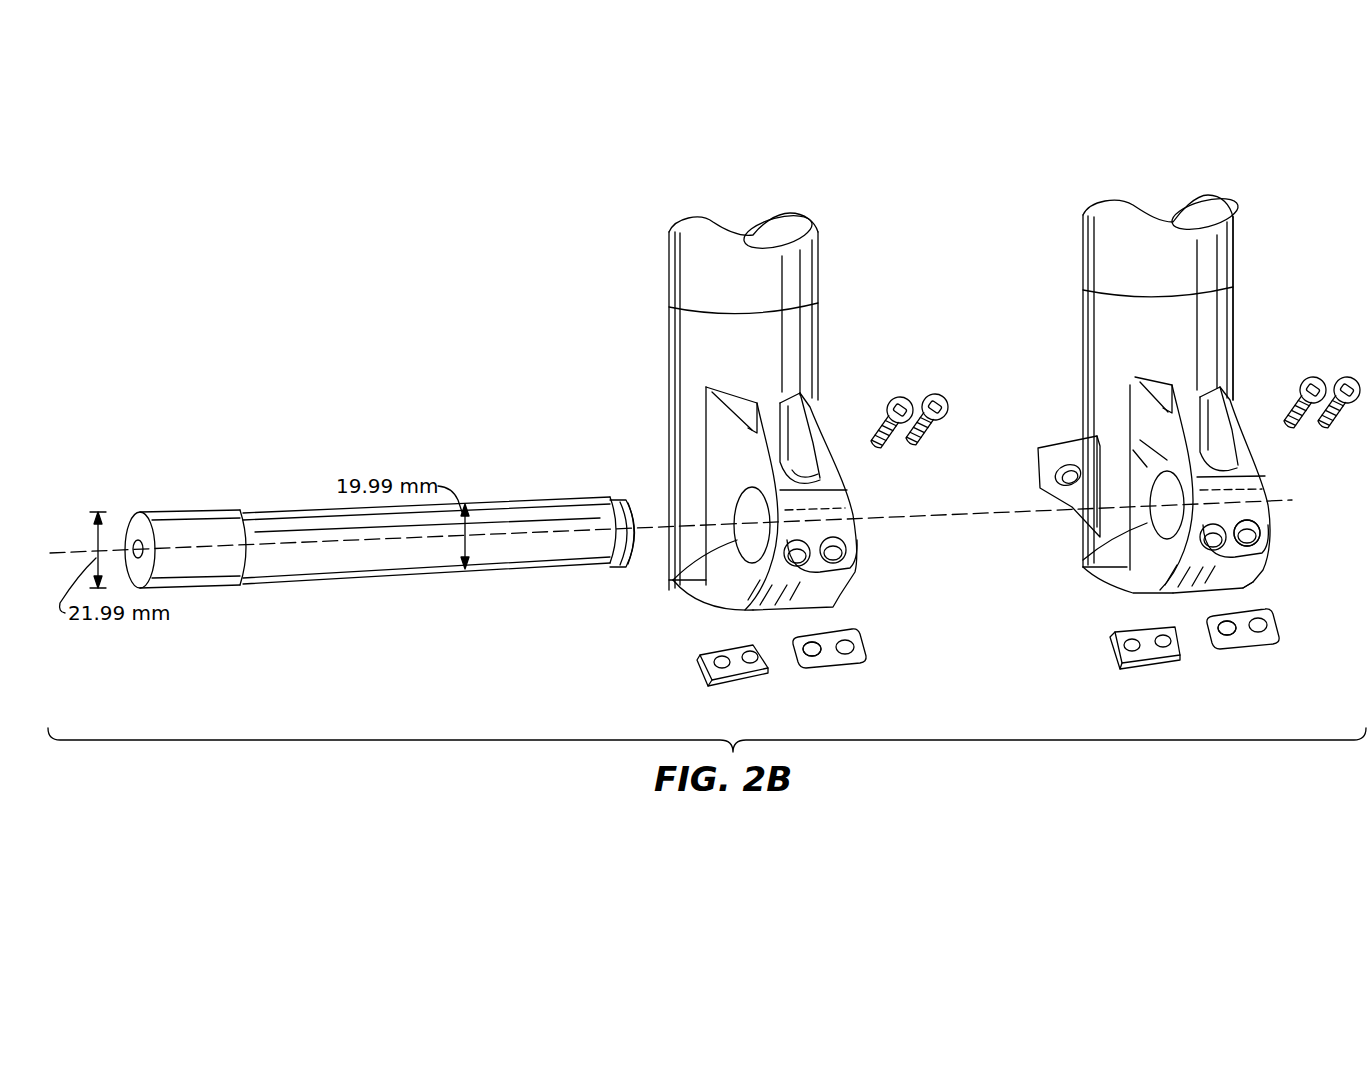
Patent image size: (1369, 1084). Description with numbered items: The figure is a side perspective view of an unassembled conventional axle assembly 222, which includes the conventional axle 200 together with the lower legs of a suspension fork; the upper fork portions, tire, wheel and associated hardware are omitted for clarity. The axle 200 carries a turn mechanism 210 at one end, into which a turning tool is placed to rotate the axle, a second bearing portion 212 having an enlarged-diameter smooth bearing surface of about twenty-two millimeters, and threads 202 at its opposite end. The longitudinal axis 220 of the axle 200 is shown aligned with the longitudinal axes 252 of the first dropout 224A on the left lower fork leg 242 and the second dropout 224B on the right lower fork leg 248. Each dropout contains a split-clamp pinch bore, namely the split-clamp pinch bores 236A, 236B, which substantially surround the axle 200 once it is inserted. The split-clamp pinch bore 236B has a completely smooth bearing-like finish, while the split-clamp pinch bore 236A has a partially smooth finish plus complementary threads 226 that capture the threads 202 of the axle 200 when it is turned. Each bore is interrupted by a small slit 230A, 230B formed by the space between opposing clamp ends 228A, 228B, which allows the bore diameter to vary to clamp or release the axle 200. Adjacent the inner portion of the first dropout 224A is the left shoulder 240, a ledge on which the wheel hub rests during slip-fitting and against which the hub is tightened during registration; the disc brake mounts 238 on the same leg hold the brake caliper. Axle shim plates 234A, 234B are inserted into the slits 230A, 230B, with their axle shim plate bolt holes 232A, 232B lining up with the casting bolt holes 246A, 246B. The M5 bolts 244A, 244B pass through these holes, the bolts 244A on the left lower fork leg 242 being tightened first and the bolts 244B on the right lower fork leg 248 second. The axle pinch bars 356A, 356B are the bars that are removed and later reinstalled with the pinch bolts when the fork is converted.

The axle 200 is at (283, 424).
The threads 202 is at (623, 502).
The turn mechanism 210 is at (136, 545).
The second bearing portion 212 is at (240, 490).
The longitudinal axis 220 is at (327, 548).
The axle assembly 222 is at (490, 657).
The first dropout 224A is at (1248, 407).
The second dropout 224B is at (747, 510).
The complementary threads 226 is at (1260, 497).
The opposing clamp ends 228A is at (1270, 551).
The opposing clamp ends 228B is at (1243, 578).
The slit 230A is at (1177, 580).
The slit 230B is at (753, 593).
The axle shim plate bolt holes 232A is at (1273, 623).
The axle shim plate bolt holes 232B is at (865, 645).
The axle shim plate 234A is at (1245, 648).
The axle shim plate 234B is at (830, 665).
The split-clamp pinch bore 236A is at (1147, 523).
The split-clamp pinch bore 236B is at (673, 593).
The disc brake mounts 238 is at (1063, 444).
The left shoulder 240 is at (1147, 467).
The left lower fork leg 242 is at (1083, 271).
The M5 bolts 244A is at (1285, 375).
The M5 bolts 244B is at (870, 392).
The bolt holes 246A is at (1263, 531).
The bolt holes 246B is at (853, 553).
The right lower fork leg 248 is at (669, 272).
The longitudinal axes 252 is at (907, 518).
The axle pinch bar 356A is at (1130, 666).
The axle pinch bar 356B is at (713, 684).